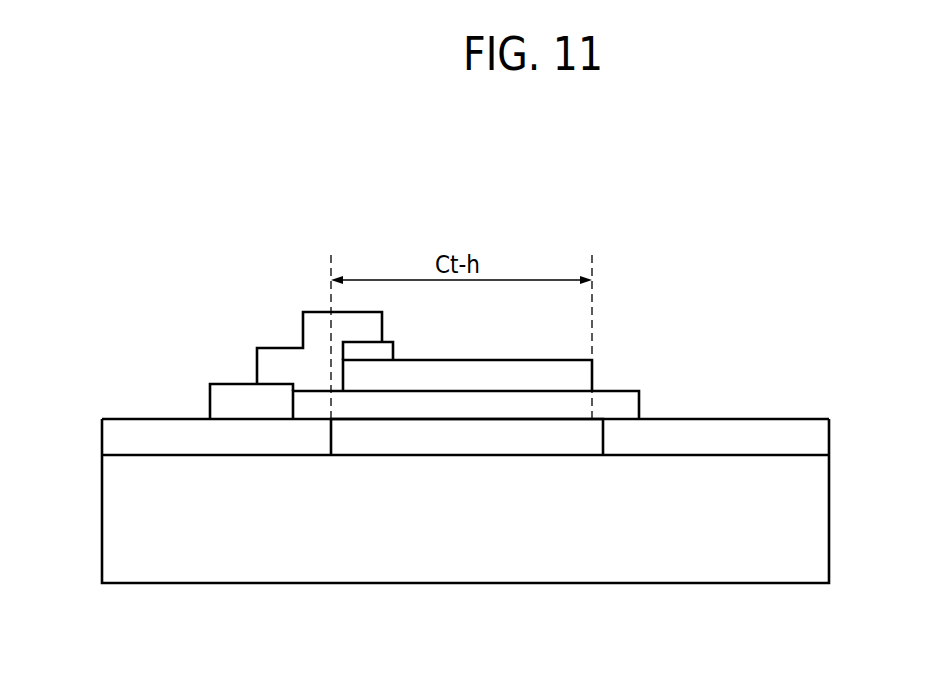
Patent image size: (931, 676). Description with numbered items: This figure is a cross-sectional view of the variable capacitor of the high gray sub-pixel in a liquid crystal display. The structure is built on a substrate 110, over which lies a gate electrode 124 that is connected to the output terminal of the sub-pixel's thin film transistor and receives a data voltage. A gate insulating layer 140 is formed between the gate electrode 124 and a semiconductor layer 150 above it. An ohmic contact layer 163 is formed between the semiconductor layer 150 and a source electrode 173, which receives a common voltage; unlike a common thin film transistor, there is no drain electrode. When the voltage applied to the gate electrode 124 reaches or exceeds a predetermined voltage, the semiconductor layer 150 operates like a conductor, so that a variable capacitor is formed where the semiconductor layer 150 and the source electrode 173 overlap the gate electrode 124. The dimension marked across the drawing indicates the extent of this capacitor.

The substrate 110 is at (128, 545).
The gate electrode 124 is at (530, 447).
The gate insulating layer 140 is at (805, 437).
The semiconductor layer 150 is at (518, 377).
The ohmic contact layer 163 is at (383, 350).
The source electrode 173 is at (270, 360).